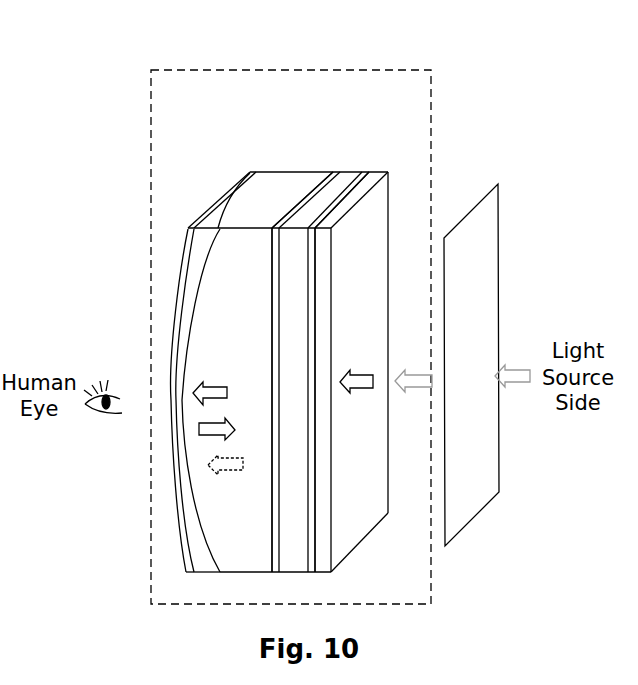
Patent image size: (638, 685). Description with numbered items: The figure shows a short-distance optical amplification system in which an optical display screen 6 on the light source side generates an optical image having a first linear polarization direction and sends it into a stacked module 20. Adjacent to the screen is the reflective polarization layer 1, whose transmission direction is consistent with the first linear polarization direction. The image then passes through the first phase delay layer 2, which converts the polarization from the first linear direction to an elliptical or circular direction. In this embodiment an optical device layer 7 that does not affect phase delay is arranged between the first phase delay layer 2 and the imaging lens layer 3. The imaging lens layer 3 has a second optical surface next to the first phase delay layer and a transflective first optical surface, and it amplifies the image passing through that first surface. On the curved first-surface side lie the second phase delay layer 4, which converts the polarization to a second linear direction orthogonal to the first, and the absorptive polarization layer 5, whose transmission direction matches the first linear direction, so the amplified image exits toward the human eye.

The reflective polarization layer 1 is at (377, 178).
The first phase delay layer 2 is at (362, 175).
The imaging lens layer 3 is at (283, 192).
The second phase delay layer 4 is at (250, 173).
The absorptive polarization layer 5 is at (233, 184).
The optical display screen 6 is at (497, 184).
The optical device layer 7 is at (331, 175).
The display module 20 is at (185, 70).